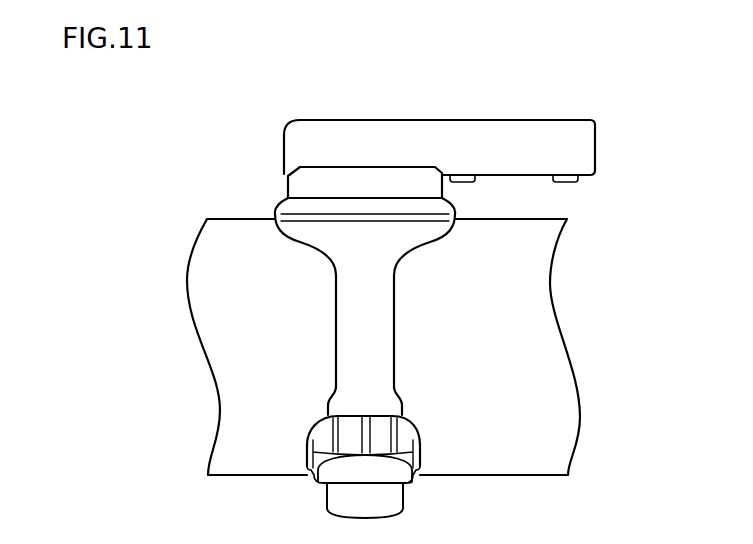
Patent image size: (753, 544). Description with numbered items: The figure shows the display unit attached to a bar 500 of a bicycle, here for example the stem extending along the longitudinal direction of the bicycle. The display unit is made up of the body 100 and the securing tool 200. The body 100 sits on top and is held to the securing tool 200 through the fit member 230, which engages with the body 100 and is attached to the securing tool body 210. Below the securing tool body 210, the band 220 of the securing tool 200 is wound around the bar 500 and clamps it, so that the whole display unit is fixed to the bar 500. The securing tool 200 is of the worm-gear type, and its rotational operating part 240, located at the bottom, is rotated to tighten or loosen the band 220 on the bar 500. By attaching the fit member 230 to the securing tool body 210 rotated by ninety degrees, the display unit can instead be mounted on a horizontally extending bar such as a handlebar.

The body 100 is at (530, 104).
The securing tool 200 is at (118, 186).
The securing tool body 210 is at (305, 220).
The band 220 is at (362, 338).
The fit member 230 is at (307, 185).
The rotational operating part 240 is at (325, 440).
The bar 500 is at (530, 349).